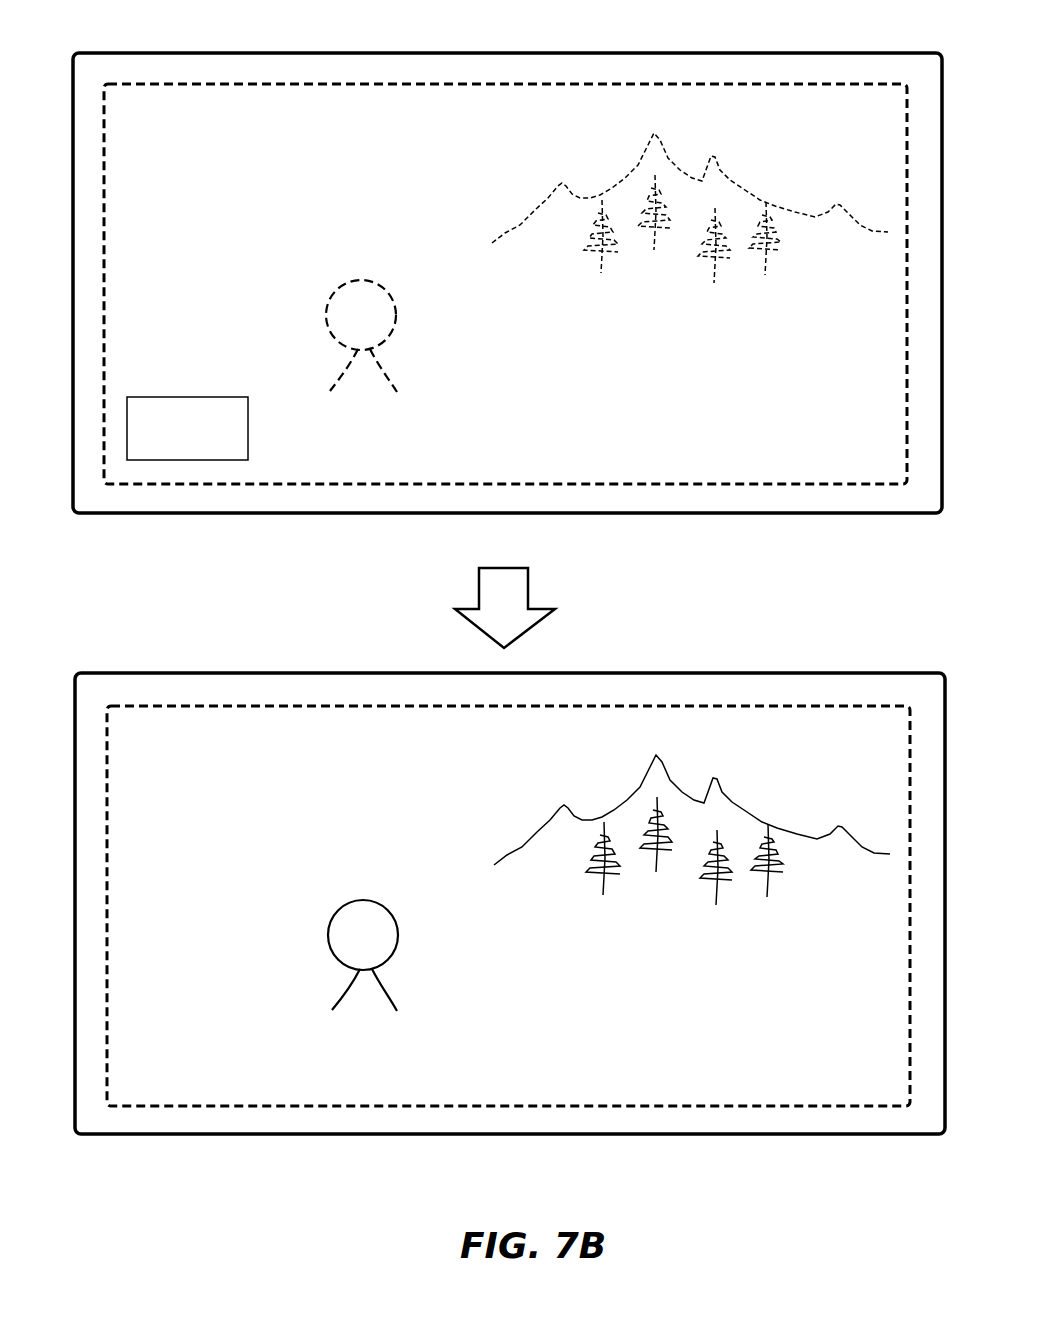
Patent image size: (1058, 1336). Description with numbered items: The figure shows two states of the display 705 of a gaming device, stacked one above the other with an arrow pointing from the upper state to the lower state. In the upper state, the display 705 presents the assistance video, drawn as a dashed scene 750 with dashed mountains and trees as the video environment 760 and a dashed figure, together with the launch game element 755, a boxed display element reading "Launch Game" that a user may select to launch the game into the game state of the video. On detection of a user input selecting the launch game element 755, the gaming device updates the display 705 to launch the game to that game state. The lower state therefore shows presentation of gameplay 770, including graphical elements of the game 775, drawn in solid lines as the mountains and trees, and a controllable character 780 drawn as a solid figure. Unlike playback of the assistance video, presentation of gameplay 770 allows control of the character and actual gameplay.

The display 705 is at (838, 52).
The virtual reality scene with launch prompt 750 is at (230, 173).
The launch game element 755 is at (393, 330).
The virtual environment (mountains and trees, dashed) 760 is at (592, 166).
The gameplay 770 is at (234, 795).
The graphical elements of game 775 is at (596, 788).
The avatar character 780 is at (393, 948).